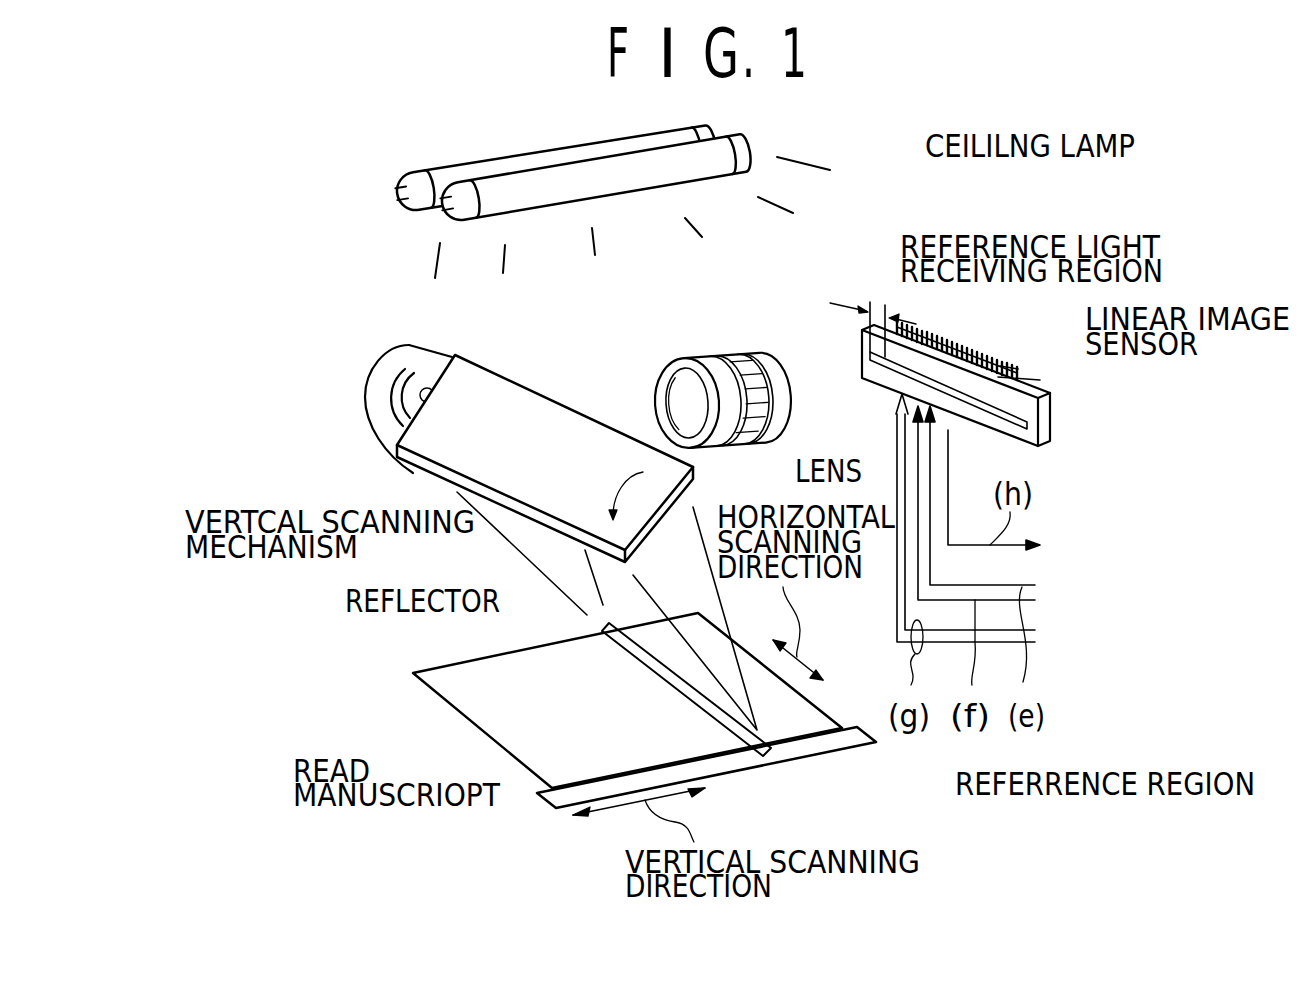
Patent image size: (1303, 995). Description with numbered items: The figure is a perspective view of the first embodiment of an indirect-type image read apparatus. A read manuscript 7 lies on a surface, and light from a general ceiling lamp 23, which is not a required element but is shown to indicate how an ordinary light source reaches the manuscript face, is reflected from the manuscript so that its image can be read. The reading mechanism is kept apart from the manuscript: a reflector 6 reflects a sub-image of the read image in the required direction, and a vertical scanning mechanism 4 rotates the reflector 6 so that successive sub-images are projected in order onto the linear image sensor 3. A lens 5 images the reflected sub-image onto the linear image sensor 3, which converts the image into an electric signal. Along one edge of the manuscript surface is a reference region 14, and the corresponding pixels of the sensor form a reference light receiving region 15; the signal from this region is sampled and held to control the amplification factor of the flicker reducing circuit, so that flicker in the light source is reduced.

The ceiling lamp 23 is at (758, 142).
The reference light receiving region 15 is at (883, 310).
The linear image sensor 3 is at (1000, 365).
The lens 5 is at (785, 418).
The vertical scanning mechanism 4 is at (338, 392).
The reflector 6 is at (545, 503).
The read manuscript 7 is at (478, 700).
The reference region 14 is at (872, 737).